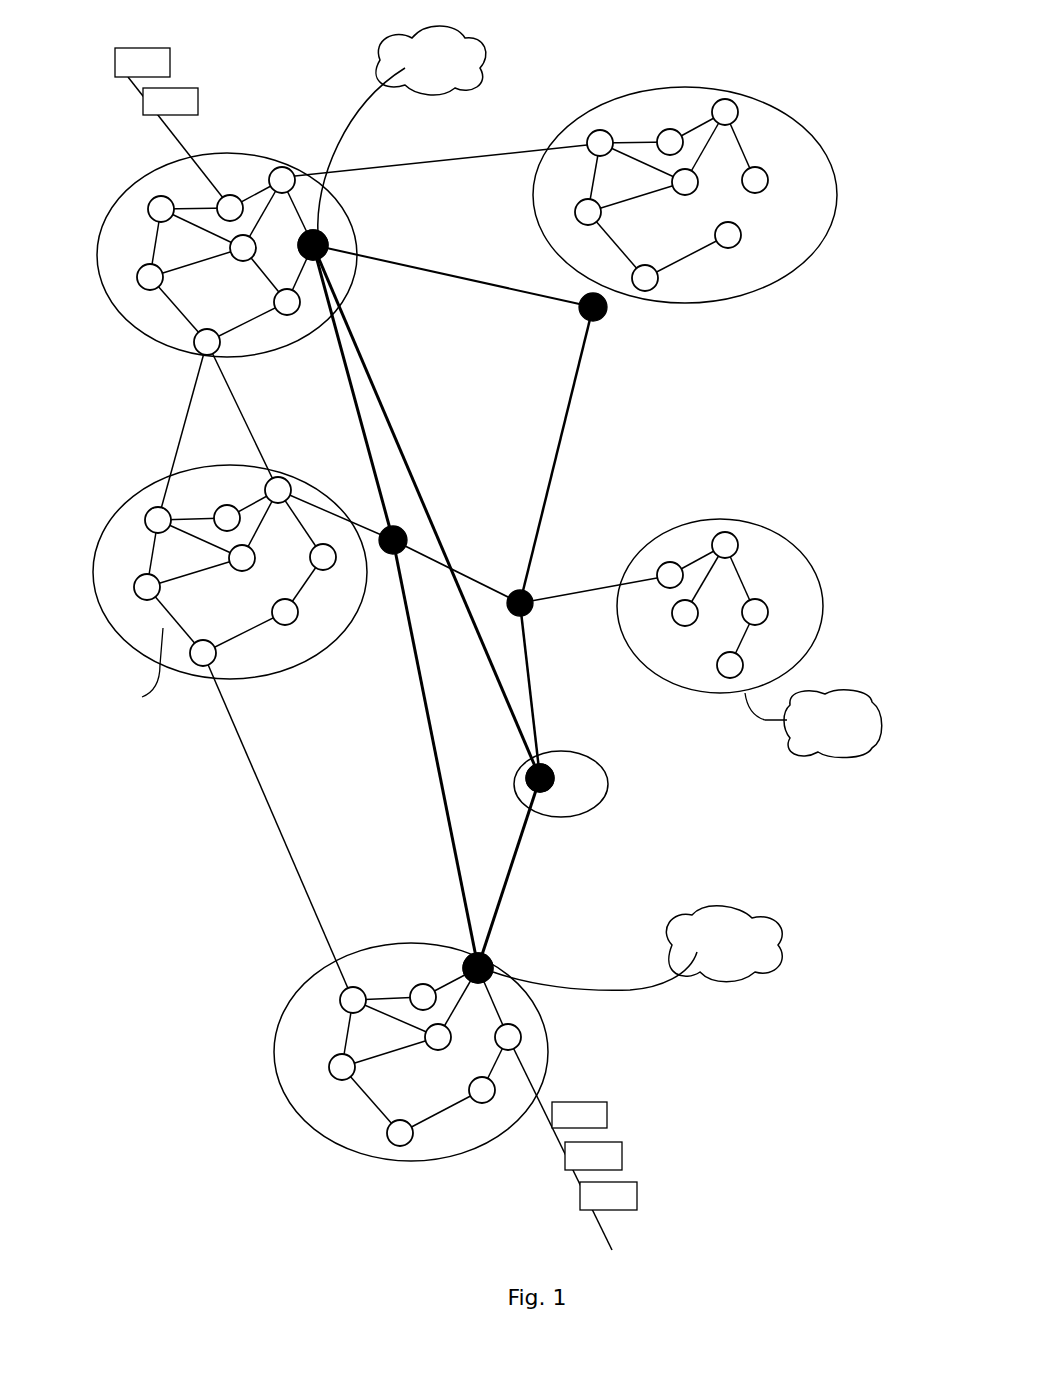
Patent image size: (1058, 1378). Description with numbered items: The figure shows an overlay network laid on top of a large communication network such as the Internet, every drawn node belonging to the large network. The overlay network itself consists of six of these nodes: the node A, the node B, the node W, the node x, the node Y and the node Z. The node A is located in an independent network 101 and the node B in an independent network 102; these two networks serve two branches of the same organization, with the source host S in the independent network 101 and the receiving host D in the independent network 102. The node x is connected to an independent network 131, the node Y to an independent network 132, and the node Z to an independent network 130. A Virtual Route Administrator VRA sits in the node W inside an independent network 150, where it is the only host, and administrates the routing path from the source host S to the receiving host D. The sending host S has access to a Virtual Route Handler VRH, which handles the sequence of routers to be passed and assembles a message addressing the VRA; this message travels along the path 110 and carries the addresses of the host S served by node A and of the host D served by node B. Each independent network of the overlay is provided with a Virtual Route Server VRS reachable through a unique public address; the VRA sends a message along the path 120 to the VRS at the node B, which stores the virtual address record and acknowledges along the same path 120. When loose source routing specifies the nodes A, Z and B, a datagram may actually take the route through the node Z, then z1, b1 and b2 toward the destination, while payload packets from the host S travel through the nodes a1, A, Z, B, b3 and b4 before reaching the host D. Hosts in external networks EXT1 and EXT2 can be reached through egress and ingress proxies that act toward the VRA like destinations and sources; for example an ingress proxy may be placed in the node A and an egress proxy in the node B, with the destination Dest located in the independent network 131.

The independent network 101 is at (300, 1000).
The independent network 102 is at (120, 200).
The path 110 is at (510, 887).
The path 120 is at (392, 432).
The independent network 130 is at (130, 500).
The independent network 131 is at (763, 537).
The independent network 132 is at (808, 130).
The independent network 150 is at (607, 798).
The node A is at (493, 965).
The node B is at (326, 232).
The receiving host D is at (172, 66).
The source host S is at (637, 1195).
The node W is at (532, 792).
The node x is at (514, 590).
The node Y is at (605, 313).
The node Z is at (385, 527).
The node a1 is at (522, 1037).
The node b1 is at (197, 352).
The node b2 is at (287, 316).
The node b3 is at (287, 168).
The node b4 is at (237, 196).
The node z1 is at (282, 480).
The Virtual Route Administrator VRA is at (515, 777).
The Virtual Route Handler VRH is at (470, 953).
The Virtual Route Server VRS is at (326, 262).
The external network EXT1 is at (774, 925).
The external network EXT2 is at (482, 42).
The destination Dest is at (813, 724).